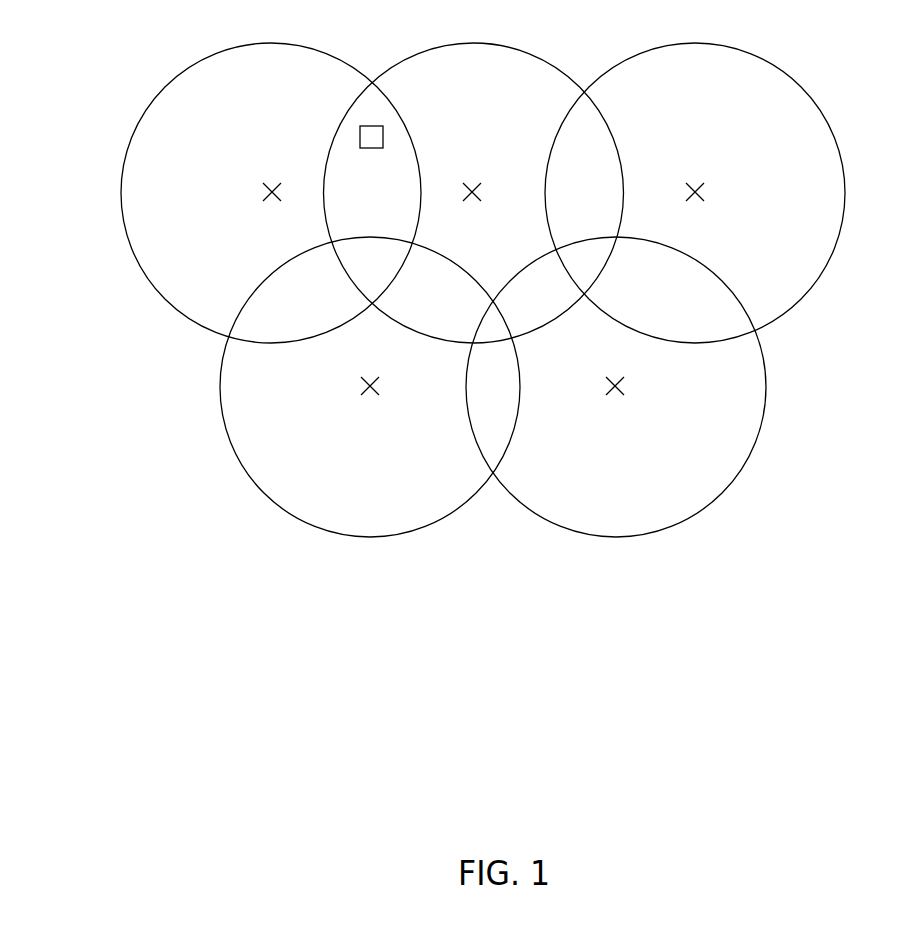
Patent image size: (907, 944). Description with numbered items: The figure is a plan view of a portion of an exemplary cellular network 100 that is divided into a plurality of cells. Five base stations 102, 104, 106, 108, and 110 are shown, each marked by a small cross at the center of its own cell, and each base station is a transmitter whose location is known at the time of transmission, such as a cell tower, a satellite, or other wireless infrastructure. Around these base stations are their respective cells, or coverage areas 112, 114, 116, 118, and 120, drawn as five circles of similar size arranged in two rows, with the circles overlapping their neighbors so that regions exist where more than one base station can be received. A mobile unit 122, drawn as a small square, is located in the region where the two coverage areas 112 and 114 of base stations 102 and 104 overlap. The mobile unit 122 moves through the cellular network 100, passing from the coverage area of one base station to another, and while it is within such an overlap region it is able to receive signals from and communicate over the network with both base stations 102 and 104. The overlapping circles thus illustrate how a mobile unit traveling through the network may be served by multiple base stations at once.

The cellular network 100 is at (150, 600).
The base station 102 is at (272, 192).
The base station 104 is at (472, 192).
The base station 106 is at (695, 192).
The base station 108 is at (370, 386).
The base station 110 is at (615, 386).
The coverage area 112 is at (275, 43).
The coverage area 114 is at (478, 43).
The coverage area 116 is at (697, 43).
The coverage area 118 is at (368, 538).
The coverage area 120 is at (616, 538).
The mobile unit 122 is at (371, 126).